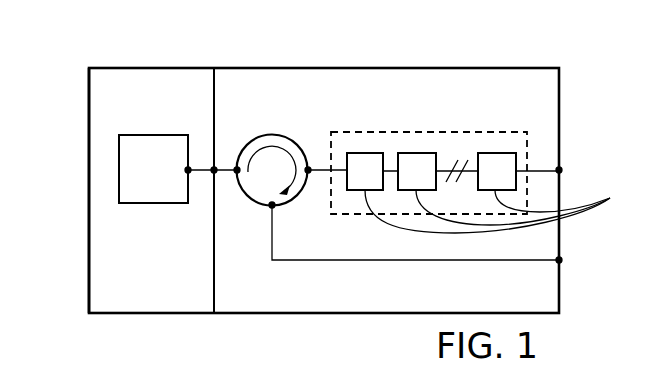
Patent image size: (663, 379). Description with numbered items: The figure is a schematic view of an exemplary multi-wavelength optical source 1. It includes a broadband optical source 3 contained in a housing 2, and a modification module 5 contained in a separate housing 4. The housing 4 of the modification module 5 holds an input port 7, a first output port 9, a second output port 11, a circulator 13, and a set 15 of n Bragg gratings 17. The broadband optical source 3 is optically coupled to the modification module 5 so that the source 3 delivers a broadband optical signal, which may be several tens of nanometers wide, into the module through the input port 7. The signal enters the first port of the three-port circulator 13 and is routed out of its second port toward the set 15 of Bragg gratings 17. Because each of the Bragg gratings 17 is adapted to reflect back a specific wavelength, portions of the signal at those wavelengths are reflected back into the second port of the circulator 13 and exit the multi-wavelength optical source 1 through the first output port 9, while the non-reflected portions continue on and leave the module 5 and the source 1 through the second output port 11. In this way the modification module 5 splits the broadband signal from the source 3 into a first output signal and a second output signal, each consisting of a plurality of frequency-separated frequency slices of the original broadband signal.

The multi-wavelength optical source 1 is at (84, 51).
The housing 2 is at (150, 313).
The broadband optical source 3 is at (165, 180).
The housing 4 is at (263, 313).
The modification module 5 is at (265, 108).
The input port 7 is at (213, 170).
The first output port 9 is at (559, 260).
The second output port 11 is at (559, 170).
The circulator 13 is at (284, 181).
The set of Bragg gratings 15 is at (427, 132).
The Bragg gratings 17 is at (499, 206).